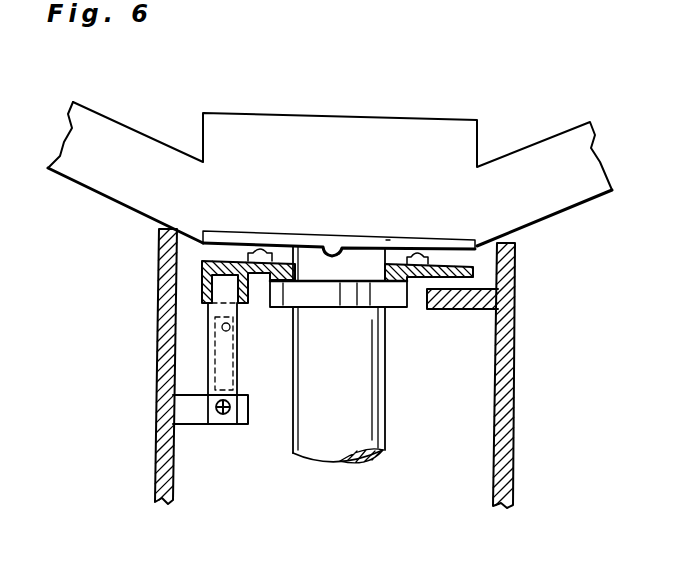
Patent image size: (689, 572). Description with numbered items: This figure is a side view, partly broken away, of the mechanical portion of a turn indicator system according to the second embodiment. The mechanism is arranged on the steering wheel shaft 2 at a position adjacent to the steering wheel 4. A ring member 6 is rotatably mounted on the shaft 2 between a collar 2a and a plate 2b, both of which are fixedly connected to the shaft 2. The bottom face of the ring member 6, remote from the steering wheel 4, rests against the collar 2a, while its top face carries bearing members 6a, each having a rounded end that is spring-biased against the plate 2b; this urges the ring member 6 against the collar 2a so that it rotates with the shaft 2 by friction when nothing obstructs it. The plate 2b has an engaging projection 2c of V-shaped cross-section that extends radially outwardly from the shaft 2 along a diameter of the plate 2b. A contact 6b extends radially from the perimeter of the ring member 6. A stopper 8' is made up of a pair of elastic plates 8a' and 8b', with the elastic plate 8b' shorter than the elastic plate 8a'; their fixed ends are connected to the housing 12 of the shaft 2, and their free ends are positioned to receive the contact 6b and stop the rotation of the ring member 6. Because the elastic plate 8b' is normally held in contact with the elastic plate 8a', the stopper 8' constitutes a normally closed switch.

The steering wheel shaft 2 is at (385, 407).
The collar 2a is at (392, 307).
The plate 2b is at (388, 243).
The engaging projection 2c is at (325, 250).
The steering wheel 4 is at (551, 146).
The ring member 6 is at (473, 272).
The bearing members 6a is at (250, 248).
The contact 6b is at (202, 279).
The stopper 8' is at (152, 363).
The elastic plate 8a' is at (165, 363).
The elastic plate 8b' is at (162, 353).
The housing 12 is at (157, 412).